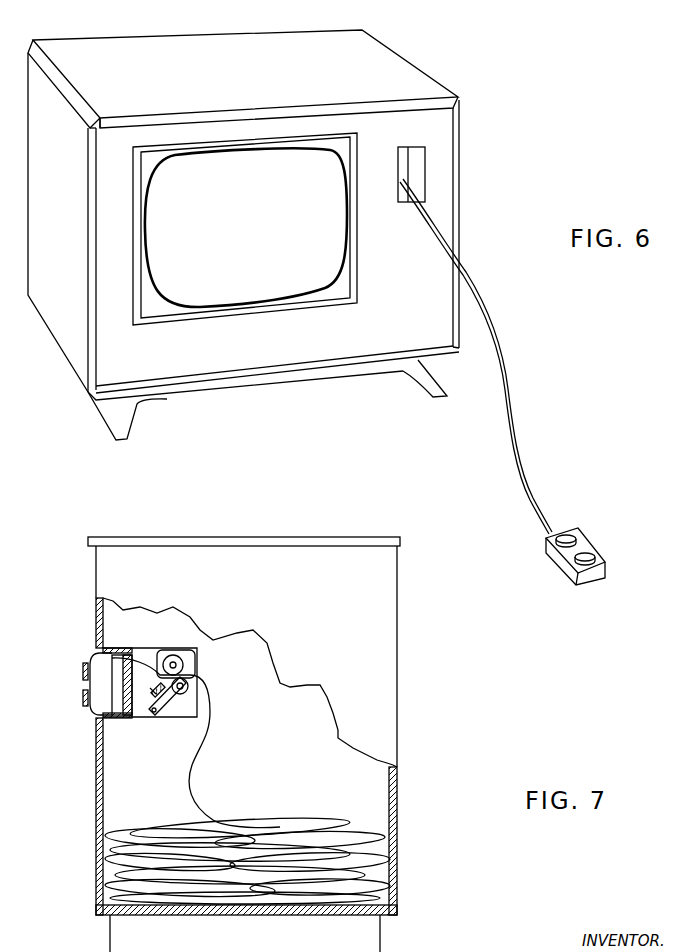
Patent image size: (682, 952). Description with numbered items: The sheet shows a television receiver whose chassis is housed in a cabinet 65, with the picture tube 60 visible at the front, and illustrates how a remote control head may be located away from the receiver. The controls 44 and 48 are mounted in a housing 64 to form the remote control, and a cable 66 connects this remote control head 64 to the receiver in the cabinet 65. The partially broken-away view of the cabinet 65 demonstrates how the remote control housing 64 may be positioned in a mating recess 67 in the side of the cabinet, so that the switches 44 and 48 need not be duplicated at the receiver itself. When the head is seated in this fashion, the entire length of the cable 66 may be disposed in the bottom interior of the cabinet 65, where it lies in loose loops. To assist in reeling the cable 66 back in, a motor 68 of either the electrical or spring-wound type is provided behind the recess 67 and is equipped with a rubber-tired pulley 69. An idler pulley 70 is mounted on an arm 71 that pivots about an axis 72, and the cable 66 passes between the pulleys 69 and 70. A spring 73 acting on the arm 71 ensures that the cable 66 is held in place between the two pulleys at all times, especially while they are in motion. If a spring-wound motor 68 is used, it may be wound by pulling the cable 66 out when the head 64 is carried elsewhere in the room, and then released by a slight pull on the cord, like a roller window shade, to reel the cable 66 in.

In FIG. 6, the cabinet 65 is at (408, 60).
In FIG. 7, the cabinet 65 is at (398, 590).
In FIG. 6, the picture tube 60 is at (237, 236).
In FIG. 6, the mating recess 67 is at (420, 176).
In FIG. 7, the mating recess 67 is at (92, 652).
In FIG. 6, the housing 64 is at (564, 567).
In FIG. 7, the housing 64 is at (105, 701).
In FIG. 6, the control 44 is at (572, 532).
In FIG. 6, the control 48 is at (598, 562).
In FIG. 7, the cable 66 is at (192, 775).
In FIG. 7, the motor 68 is at (163, 655).
In FIG. 7, the rubber-tired pulley 69 is at (176, 661).
In FIG. 7, the idler pulley 70 is at (181, 694).
In FIG. 7, the arm 71 is at (174, 708).
In FIG. 7, the axis 72 is at (162, 699).
In FIG. 7, the spring 73 is at (152, 694).